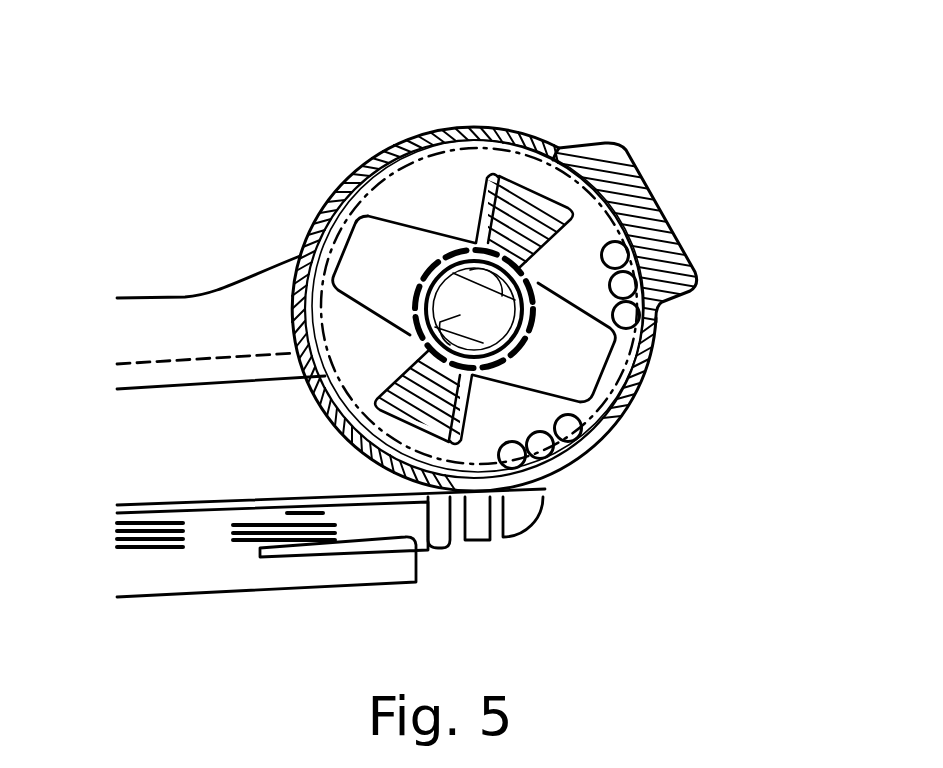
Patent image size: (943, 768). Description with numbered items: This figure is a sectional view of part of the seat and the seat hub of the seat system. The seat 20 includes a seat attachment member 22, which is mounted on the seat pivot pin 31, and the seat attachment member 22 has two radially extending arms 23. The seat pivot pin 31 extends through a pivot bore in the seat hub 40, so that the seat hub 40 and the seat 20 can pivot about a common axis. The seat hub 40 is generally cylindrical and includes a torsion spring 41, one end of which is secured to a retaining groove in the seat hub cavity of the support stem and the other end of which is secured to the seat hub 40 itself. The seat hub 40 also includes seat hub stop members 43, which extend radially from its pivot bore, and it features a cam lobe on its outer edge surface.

The seat 20 is at (183, 315).
The seat attachment member 22 is at (505, 195).
The radially extending arms 23 is at (580, 355).
The seat pivot pin 31 is at (462, 316).
The seat hub 40 is at (367, 140).
The torsion spring 41 is at (662, 303).
The seat hub stop members 43 is at (423, 412).